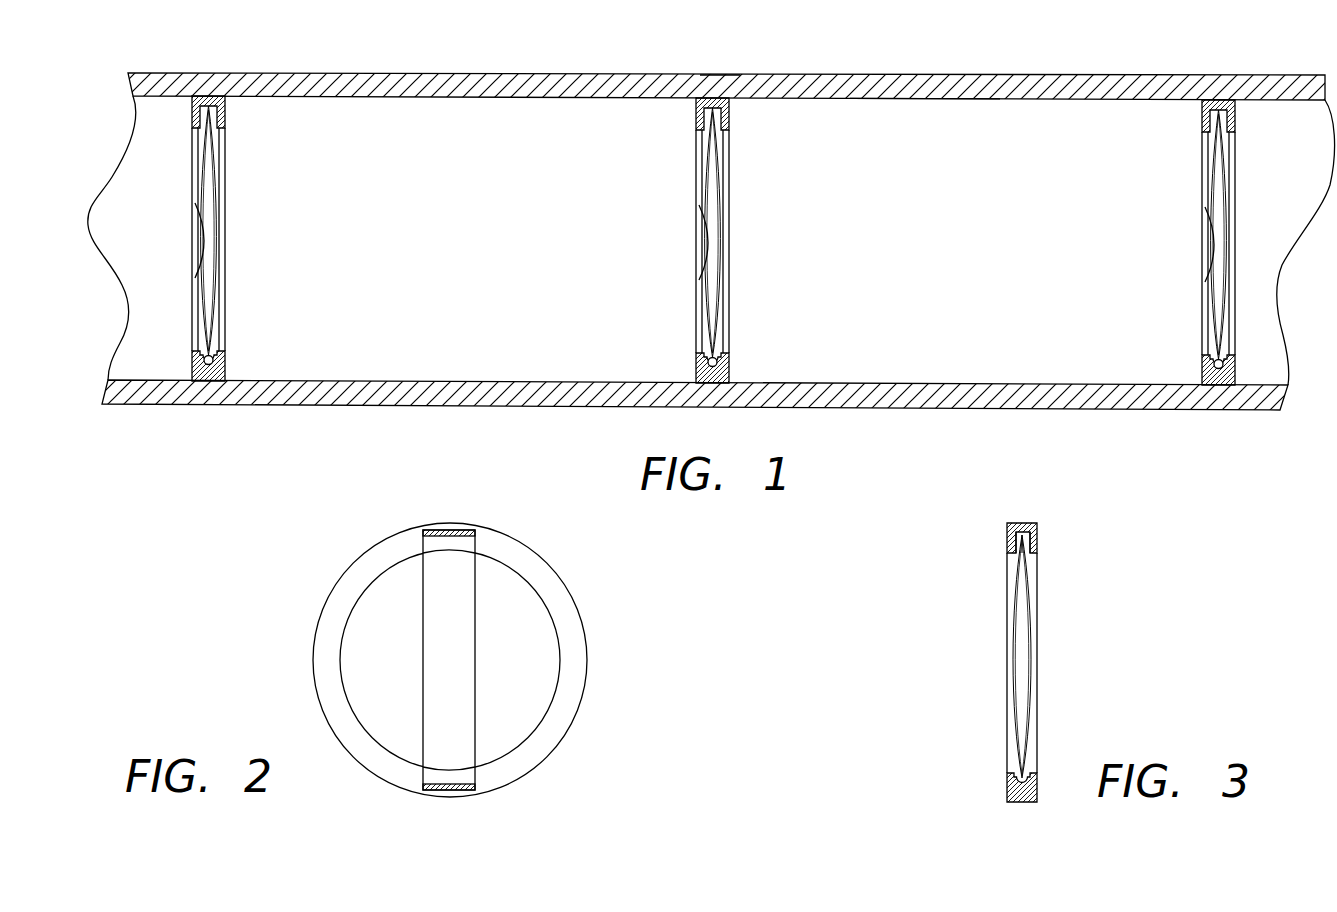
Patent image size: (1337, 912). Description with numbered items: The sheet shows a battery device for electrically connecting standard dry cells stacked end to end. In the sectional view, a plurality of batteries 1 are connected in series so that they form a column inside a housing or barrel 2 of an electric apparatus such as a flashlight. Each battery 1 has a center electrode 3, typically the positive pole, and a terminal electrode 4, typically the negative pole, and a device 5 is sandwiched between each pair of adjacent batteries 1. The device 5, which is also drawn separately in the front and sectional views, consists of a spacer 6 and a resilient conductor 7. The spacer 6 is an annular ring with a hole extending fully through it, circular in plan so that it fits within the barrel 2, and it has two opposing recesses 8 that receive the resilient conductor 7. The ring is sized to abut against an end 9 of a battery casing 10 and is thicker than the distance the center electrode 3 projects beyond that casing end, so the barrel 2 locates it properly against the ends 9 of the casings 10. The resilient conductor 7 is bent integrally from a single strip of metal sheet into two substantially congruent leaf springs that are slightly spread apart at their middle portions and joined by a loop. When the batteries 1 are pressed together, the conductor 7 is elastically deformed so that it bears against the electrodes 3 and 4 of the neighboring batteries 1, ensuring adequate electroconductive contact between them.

In FIG. 1, the battery 1 is at (432, 130).
In FIG. 1, the barrel 2 is at (1147, 88).
In FIG. 1, the center electrode 3 is at (700, 246).
In FIG. 1, the terminal electrode 4 is at (719, 240).
In FIG. 1, the device 5 is at (723, 80).
In FIG. 3, the spacer 6 is at (1037, 540).
In FIG. 1, the resilient conductor 7 is at (705, 190).
In FIG. 3, the resilient conductor 7 is at (1030, 596).
In FIG. 2, the recess 8 is at (443, 530).
In FIG. 3, the recess 8 is at (1011, 546).
In FIG. 1, the end 9 is at (696, 112).
In FIG. 1, the battery casing 10 is at (918, 93).